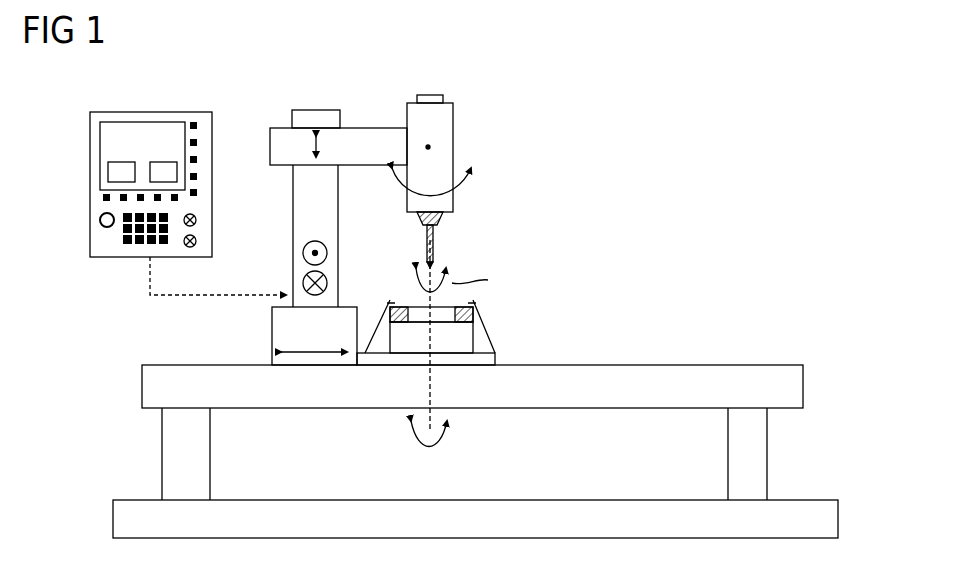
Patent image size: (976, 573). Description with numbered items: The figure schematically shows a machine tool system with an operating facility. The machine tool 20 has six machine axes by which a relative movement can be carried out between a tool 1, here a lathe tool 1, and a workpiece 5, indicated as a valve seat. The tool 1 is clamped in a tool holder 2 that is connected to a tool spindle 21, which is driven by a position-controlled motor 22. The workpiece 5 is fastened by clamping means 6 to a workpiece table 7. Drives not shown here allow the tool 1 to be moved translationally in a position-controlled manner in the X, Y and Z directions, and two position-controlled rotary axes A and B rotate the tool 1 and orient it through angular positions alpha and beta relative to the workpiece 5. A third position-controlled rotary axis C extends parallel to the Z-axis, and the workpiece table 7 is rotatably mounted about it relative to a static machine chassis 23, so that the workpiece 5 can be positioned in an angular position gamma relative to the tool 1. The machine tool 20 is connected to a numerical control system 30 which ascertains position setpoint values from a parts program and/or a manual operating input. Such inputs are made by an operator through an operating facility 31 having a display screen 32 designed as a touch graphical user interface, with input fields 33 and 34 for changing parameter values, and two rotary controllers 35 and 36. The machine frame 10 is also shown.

The tool 1 is at (422, 232).
The tool holder 2 is at (437, 228).
The workpiece 5 is at (474, 308).
The clamping means 6 is at (485, 337).
The workpiece table 7 is at (486, 363).
The machine tool 10 is at (313, 99).
The machine tool 20 is at (492, 261).
The tool spindle 21 is at (445, 203).
The position-controlled motor 22 is at (445, 118).
The static machine chassis 23 is at (735, 375).
The numerical control system 30 is at (156, 160).
The operating facility 31 is at (123, 252).
The display screen 32 is at (140, 131).
The input field 33 is at (165, 172).
The input field 34 is at (122, 172).
The rotary controller 35 is at (196, 220).
The rotary controller 36 is at (196, 243).
The rotary axis A is at (438, 263).
The rotary axis B is at (431, 147).
The rotary axis C is at (427, 383).